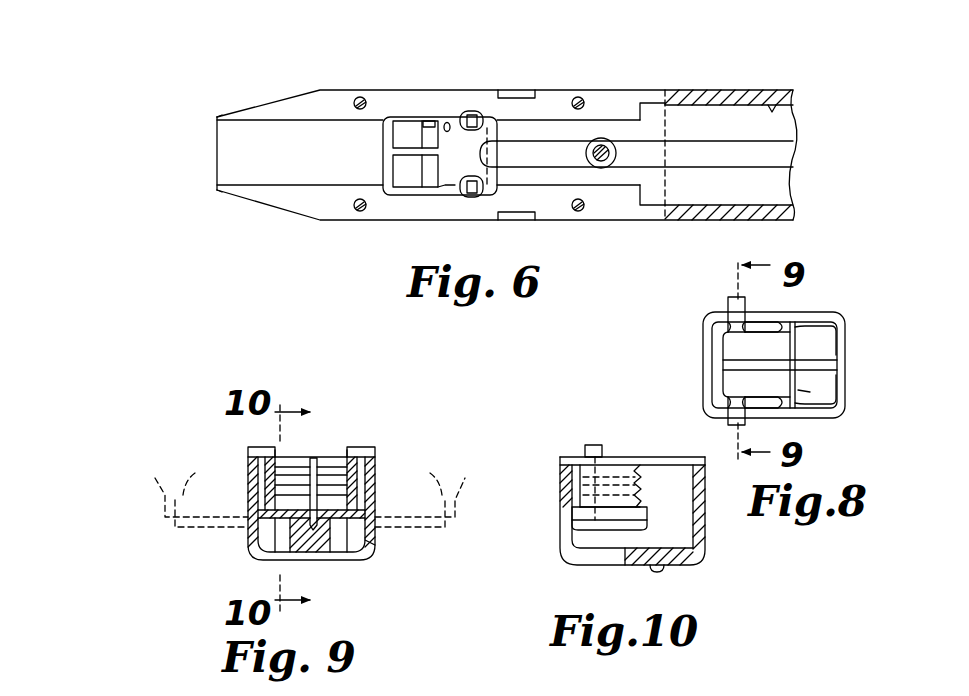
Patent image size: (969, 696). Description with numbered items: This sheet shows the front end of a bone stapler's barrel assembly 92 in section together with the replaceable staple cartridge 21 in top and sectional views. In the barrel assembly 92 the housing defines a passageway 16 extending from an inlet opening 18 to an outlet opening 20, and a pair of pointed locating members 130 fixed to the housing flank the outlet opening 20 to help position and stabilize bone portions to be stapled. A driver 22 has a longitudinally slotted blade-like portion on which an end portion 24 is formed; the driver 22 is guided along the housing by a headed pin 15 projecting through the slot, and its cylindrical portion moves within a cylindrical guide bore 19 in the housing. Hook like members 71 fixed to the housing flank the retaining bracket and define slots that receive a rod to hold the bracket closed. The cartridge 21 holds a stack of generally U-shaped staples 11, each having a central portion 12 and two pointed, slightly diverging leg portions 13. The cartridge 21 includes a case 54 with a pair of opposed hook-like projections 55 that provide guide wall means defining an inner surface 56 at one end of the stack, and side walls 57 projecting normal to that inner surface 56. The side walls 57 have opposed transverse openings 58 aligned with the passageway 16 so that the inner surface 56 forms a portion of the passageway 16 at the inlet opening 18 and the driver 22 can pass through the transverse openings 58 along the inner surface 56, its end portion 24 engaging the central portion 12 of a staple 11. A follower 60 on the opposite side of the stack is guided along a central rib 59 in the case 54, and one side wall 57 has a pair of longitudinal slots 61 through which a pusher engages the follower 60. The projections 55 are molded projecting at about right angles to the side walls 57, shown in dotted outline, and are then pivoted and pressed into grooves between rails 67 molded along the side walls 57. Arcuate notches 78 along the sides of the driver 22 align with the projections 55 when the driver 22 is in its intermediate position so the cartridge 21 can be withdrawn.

In FIG. 6, the staple 11 is at (422, 181).
In FIG. 8, the staple 11 is at (775, 325).
In FIG. 9, the staple 11 is at (357, 466).
In FIG. 10, the staple 11 is at (575, 501).
In FIG. 8, the central portion 12 is at (712, 360).
In FIG. 9, the central portion 12 is at (300, 470).
In FIG. 10, the central portion 12 is at (578, 467).
In FIG. 8, the leg portions 13 is at (770, 395).
In FIG. 10, the leg portions 13 is at (634, 468).
In FIG. 6, the headed pin 15 is at (601, 148).
In FIG. 6, the passageway 16 is at (316, 160).
In FIG. 6, the inlet opening 18 is at (447, 123).
In FIG. 6, the cylindrical guide bore 19 is at (770, 108).
In FIG. 6, the outlet opening 20 is at (217, 150).
In FIG. 6, the cartridge 21 is at (385, 116).
In FIG. 8, the cartridge 21 is at (702, 396).
In FIG. 9, the cartridge 21 is at (248, 546).
In FIG. 10, the cartridge 21 is at (568, 565).
In FIG. 6, the driver 22 is at (717, 123).
In FIG. 6, the end portion 24 is at (474, 163).
In FIG. 6, the case 54 is at (440, 196).
In FIG. 8, the case 54 is at (822, 316).
In FIG. 9, the case 54 is at (375, 546).
In FIG. 10, the case 54 is at (705, 548).
In FIG. 6, the hook-like projections 55 is at (476, 112).
In FIG. 8, the hook-like projections 55 is at (727, 320).
In FIG. 9, the hook-like projections 55 is at (258, 447).
In FIG. 10, the hook-like projections 55 is at (596, 445).
In FIG. 9, the inner surface 56 is at (347, 415).
In FIG. 10, the inner surface 56 is at (602, 468).
In FIG. 6, the side walls 57 is at (405, 118).
In FIG. 8, the side walls 57 is at (845, 400).
In FIG. 9, the side walls 57 is at (265, 492).
In FIG. 10, the side walls 57 is at (705, 506).
In FIG. 8, the transverse openings 58 is at (704, 338).
In FIG. 10, the transverse openings 58 is at (560, 462).
In FIG. 6, the central rib 59 is at (398, 148).
In FIG. 8, the central rib 59 is at (822, 360).
In FIG. 9, the central rib 59 is at (313, 458).
In FIG. 10, the central rib 59 is at (684, 503).
In FIG. 8, the follower 60 is at (800, 392).
In FIG. 9, the follower 60 is at (318, 535).
In FIG. 10, the follower 60 is at (648, 520).
In FIG. 9, the longitudinal slots 61 is at (282, 558).
In FIG. 10, the longitudinal slots 61 is at (622, 565).
In FIG. 8, the rails 67 is at (760, 303).
In FIG. 6, the hook like members 71 is at (518, 95).
In FIG. 6, the arcuate notches 78 is at (466, 112).
In FIG. 6, the barrel assembly 92 is at (722, 221).
In FIG. 6, the locating members 130 is at (217, 116).